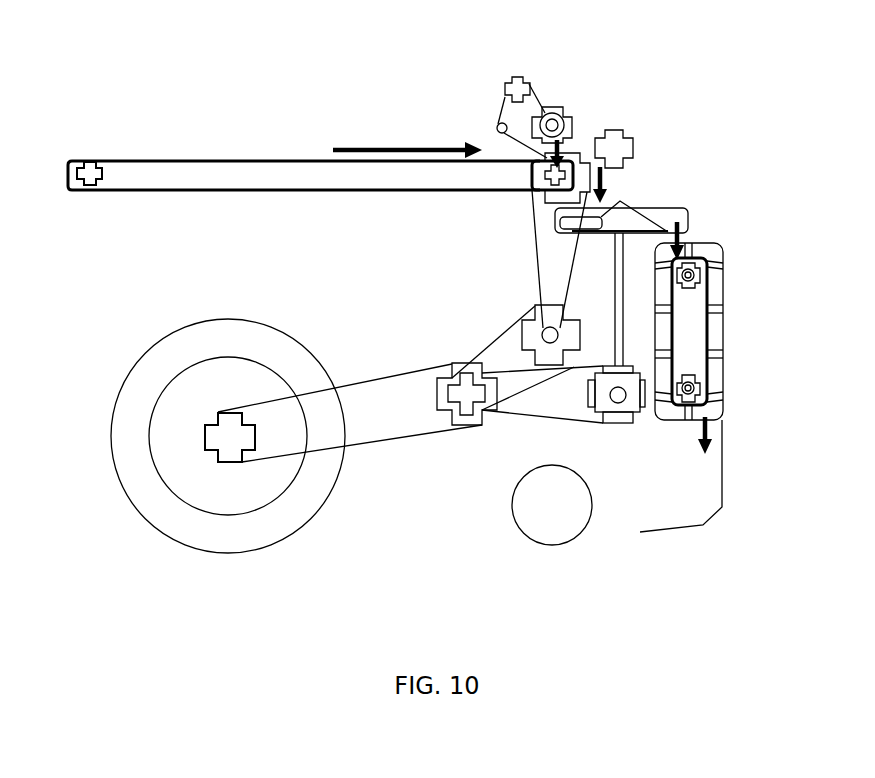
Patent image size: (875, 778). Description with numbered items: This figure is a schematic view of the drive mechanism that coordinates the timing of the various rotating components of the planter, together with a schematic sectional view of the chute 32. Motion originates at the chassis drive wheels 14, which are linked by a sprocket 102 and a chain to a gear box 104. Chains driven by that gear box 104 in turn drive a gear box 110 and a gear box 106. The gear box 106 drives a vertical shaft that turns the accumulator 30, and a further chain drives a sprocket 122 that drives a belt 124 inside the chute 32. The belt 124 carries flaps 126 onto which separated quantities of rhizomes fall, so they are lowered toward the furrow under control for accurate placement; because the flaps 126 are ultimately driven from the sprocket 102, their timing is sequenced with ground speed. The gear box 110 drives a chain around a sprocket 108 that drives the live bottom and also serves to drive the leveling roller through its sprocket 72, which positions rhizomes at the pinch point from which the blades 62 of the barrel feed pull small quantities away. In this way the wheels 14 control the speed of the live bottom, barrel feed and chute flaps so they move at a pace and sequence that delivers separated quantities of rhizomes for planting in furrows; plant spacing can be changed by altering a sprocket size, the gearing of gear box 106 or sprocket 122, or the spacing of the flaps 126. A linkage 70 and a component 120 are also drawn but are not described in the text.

The chassis drive wheels 14 is at (300, 508).
The accumulator 30 is at (630, 218).
The chute 32 is at (723, 278).
The blades of the barrel feed 62 is at (627, 147).
The link arm 70 is at (516, 77).
The sprocket 72 is at (559, 113).
The sprocket 102 is at (205, 440).
The gear box 104 is at (465, 402).
The gear box 106 is at (620, 408).
The sprocket 108 is at (546, 175).
The gear box 110 is at (543, 336).
The upper roller 120 is at (703, 258).
The sprocket 122 is at (708, 398).
The belt 124 is at (709, 338).
The flaps 126 is at (723, 308).